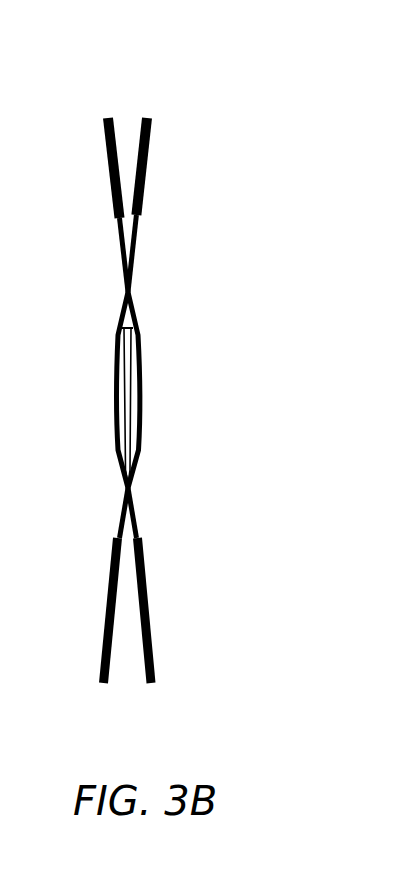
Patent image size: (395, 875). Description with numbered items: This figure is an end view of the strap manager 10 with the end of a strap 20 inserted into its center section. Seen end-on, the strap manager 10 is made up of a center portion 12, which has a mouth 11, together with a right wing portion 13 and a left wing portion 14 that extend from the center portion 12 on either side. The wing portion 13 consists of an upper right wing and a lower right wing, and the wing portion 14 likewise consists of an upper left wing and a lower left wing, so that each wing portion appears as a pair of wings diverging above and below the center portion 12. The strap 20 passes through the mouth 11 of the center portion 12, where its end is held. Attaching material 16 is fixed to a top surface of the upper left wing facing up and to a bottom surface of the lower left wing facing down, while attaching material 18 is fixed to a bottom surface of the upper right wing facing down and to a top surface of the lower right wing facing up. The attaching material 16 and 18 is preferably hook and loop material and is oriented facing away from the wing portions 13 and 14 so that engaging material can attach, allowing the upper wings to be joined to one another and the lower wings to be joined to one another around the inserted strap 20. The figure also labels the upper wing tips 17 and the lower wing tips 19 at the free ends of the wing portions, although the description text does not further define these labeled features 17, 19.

The strap manager 10 is at (161, 364).
The mouth 11 is at (140, 382).
The center portion 12 is at (132, 394).
The right wing portion 13 is at (176, 165).
The left wing portion 14 is at (169, 596).
The attaching material 16 is at (107, 597).
The upper strand ends 17 is at (117, 147).
The attaching material 18 is at (118, 180).
The lower strand ends 19 is at (101, 654).
The strap 20 is at (128, 408).